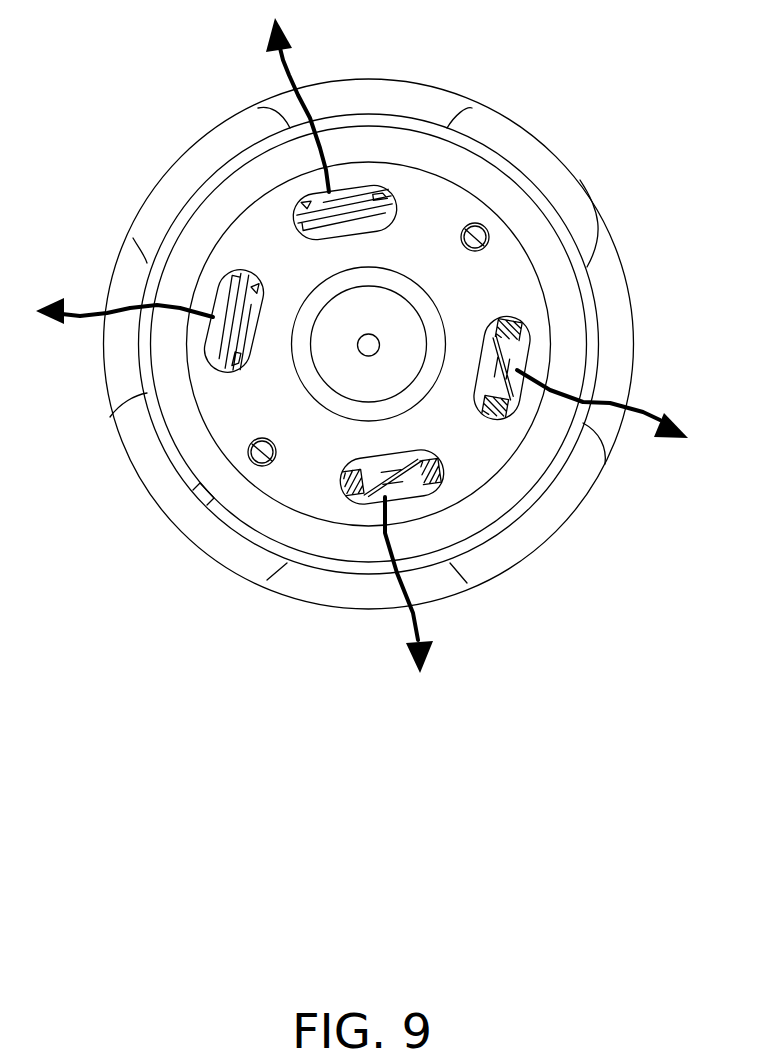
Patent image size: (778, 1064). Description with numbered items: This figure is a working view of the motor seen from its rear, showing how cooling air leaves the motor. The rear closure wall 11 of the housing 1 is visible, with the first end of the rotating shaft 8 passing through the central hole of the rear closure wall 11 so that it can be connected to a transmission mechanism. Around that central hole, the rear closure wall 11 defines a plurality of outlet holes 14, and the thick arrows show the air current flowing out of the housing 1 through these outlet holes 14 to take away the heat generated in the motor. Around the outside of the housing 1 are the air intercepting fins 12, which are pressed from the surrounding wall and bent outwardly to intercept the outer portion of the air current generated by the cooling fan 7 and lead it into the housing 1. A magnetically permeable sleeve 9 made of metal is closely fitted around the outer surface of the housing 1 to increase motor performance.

The housing 1 is at (207, 513).
The cooling fan 7 is at (617, 322).
The rotating shaft 8 is at (369, 346).
The magnetically permeable sleeve 9 is at (110, 417).
The rear closure wall 11 is at (487, 447).
The air intercepting fins 12 is at (203, 170).
The outlet holes 14 is at (368, 192).